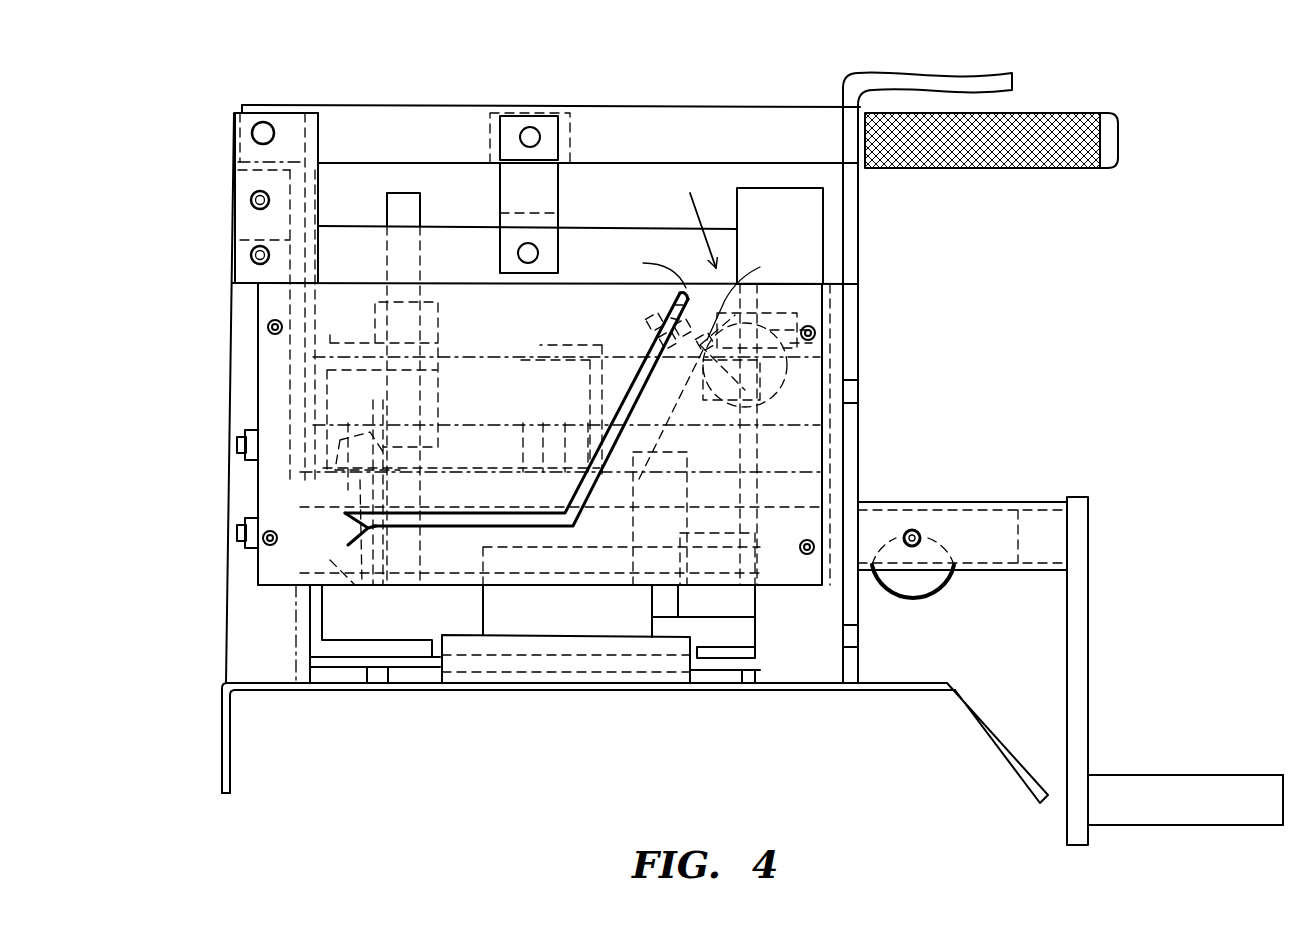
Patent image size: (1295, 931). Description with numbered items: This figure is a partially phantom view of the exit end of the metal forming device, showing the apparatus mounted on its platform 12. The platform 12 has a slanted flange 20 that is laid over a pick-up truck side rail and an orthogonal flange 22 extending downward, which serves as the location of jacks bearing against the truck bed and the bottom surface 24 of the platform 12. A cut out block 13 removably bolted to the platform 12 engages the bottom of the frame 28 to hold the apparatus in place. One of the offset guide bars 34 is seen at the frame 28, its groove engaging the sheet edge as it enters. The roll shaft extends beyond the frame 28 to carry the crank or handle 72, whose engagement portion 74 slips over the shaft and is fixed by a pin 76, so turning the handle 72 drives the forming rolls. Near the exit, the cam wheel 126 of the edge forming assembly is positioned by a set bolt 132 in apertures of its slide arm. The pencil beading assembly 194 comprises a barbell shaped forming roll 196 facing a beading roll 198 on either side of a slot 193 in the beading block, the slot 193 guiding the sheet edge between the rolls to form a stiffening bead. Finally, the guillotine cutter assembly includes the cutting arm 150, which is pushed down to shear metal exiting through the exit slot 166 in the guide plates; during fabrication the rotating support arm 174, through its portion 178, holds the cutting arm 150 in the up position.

The platform 12 is at (520, 690).
The cut out block 13 is at (668, 648).
The slanted flange 20 is at (1010, 768).
The orthogonal flange 22 is at (231, 753).
The bottom surface 24 is at (350, 697).
The frame 28 is at (240, 222).
The offset guide bar 34 is at (780, 380).
The crank or handle 72 is at (1148, 792).
The engagement portion 74 is at (980, 518).
The pin 76 is at (918, 530).
The cam wheel 126 is at (388, 498).
The set bolt 132 is at (455, 313).
The cutting arm 150 is at (1043, 120).
The exit slot 166 is at (662, 318).
The rotating support arm 174 is at (853, 253).
The portion of support arm 178 is at (975, 80).
The slot 193 is at (672, 338).
The pencil beading assembly 194 is at (689, 212).
The barbell shaped forming roll 196 is at (635, 259).
The beading roll 198 is at (760, 279).